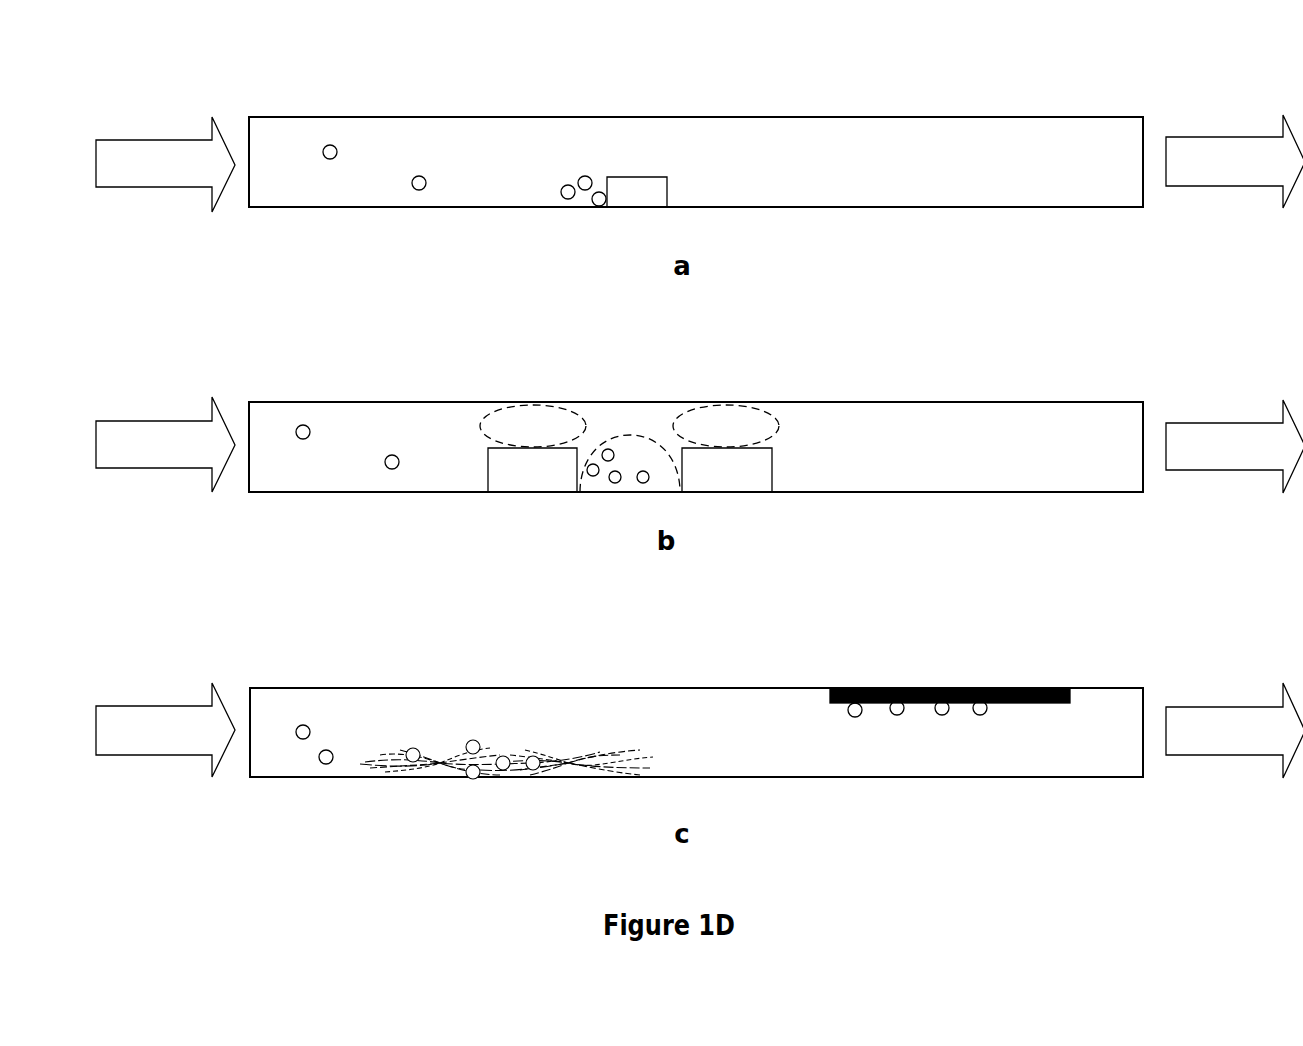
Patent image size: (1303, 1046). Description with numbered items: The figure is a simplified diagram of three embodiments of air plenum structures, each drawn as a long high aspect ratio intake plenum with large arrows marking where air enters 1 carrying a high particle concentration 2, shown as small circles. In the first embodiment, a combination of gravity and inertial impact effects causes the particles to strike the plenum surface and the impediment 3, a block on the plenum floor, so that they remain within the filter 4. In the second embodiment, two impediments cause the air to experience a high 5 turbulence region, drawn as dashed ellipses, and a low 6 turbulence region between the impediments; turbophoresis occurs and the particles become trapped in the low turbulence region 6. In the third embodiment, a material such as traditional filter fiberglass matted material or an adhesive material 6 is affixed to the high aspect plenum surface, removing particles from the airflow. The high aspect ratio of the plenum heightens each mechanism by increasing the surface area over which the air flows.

The air entry 1 is at (145, 223).
The high particle concentration 2 is at (383, 432).
The impediment 3 is at (633, 208).
The filter 4 is at (572, 175).
The high turbulence region 5 is at (740, 417).
The low turbulence region 6 is at (653, 465).